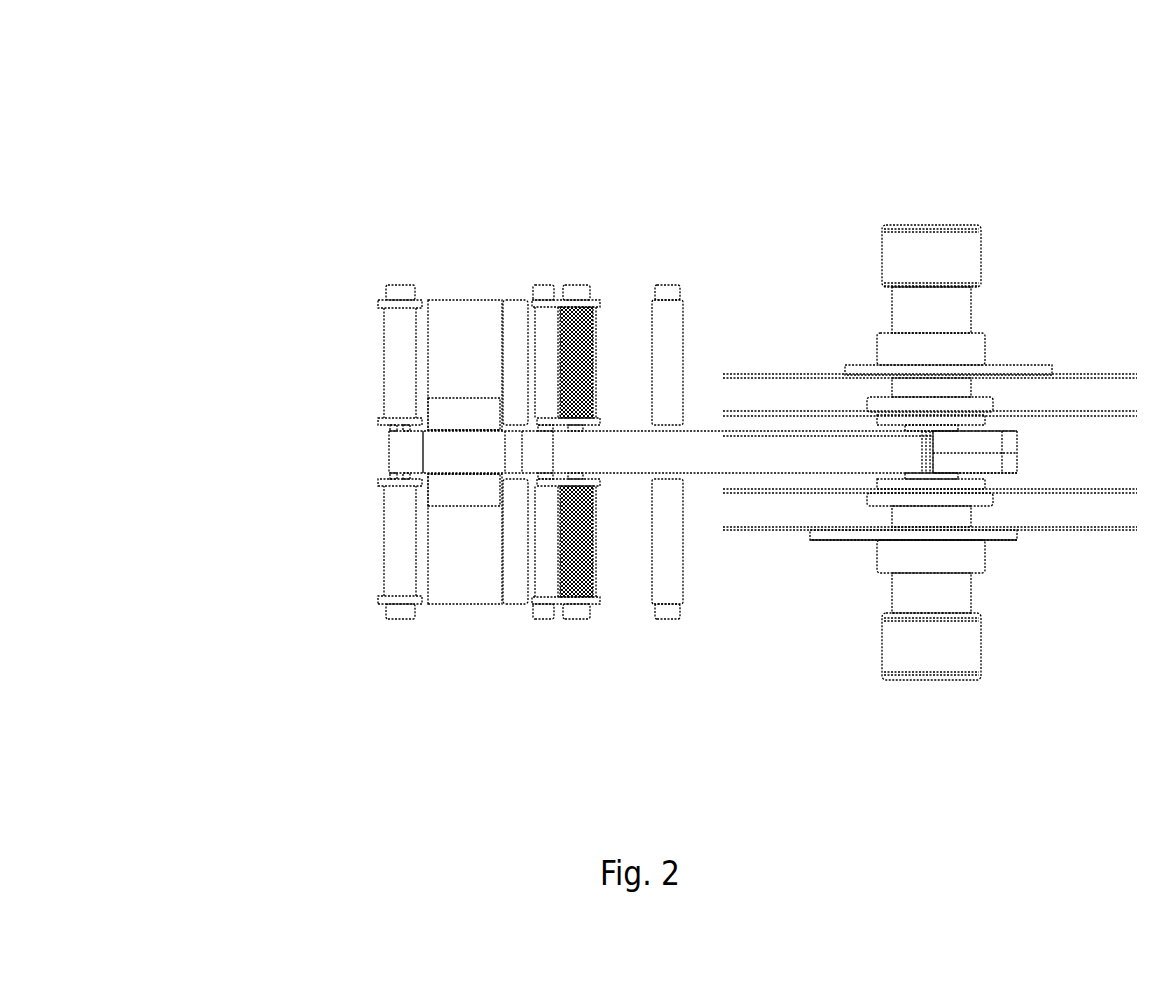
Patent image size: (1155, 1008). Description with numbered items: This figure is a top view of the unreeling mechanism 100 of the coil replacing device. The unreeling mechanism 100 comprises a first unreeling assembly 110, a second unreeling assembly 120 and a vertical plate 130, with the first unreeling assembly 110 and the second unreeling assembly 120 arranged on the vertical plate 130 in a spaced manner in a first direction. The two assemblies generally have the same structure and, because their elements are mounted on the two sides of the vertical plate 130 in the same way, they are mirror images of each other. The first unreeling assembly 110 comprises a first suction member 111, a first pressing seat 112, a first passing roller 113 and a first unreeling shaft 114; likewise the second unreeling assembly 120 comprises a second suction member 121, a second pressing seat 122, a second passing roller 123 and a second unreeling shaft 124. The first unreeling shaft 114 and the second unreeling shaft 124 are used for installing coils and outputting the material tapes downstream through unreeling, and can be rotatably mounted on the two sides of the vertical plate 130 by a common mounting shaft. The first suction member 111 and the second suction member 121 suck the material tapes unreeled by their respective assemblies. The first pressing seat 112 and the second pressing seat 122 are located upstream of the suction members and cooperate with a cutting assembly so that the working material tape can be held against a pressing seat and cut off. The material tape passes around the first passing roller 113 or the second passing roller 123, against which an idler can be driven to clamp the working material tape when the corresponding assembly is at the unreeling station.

The unreeling mechanism 100 is at (310, 70).
The first unreeling assembly 110 is at (708, 755).
The first suction member 111 is at (475, 605).
The first pressing seat 112 is at (512, 605).
The first passing roller 113 is at (548, 605).
The first unreeling shaft 114 is at (860, 535).
The second unreeling assembly 120 is at (730, 146).
The second suction member 121 is at (474, 312).
The second pressing seat 122 is at (515, 315).
The second passing roller 123 is at (548, 313).
The second unreeling shaft 124 is at (860, 362).
The vertical plate 130 is at (440, 457).